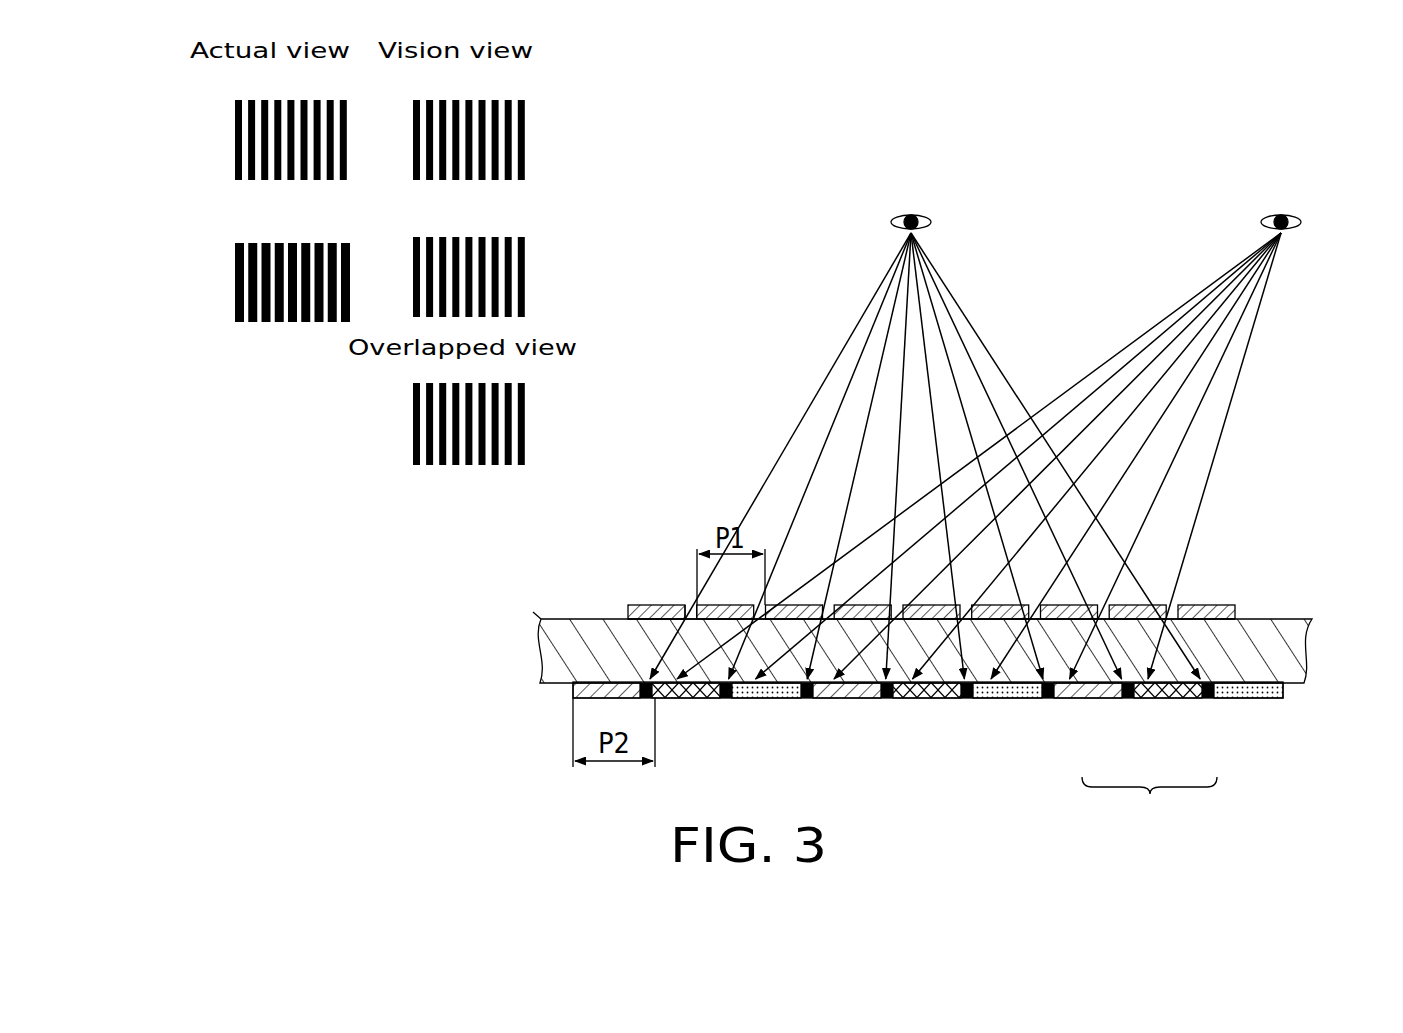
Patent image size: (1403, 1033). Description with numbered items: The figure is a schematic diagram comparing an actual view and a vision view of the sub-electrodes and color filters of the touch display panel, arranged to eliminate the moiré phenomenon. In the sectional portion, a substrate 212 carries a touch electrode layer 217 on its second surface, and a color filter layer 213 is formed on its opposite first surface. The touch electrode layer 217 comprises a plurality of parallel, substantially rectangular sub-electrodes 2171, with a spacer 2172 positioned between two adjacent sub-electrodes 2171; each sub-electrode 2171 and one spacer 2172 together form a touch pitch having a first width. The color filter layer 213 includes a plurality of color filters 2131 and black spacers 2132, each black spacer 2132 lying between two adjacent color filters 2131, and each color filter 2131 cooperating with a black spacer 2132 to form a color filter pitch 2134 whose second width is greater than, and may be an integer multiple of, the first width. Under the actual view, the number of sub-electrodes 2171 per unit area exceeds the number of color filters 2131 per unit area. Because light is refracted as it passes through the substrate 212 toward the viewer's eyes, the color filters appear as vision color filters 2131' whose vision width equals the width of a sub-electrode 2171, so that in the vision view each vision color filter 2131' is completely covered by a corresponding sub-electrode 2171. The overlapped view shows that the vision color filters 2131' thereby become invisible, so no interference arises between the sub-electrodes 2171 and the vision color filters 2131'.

The sub-electrode 2171 is at (235, 142).
The color filter 2131 is at (670, 509).
The vision color filter 2131' is at (534, 277).
The spacer 2172 is at (688, 604).
The touch electrode layer 217 is at (1244, 605).
The substrate 212 is at (1297, 656).
The color filter layer 213 is at (1293, 691).
The black spacer 2132 is at (1130, 699).
The color filter pitch 2134 is at (1149, 802).